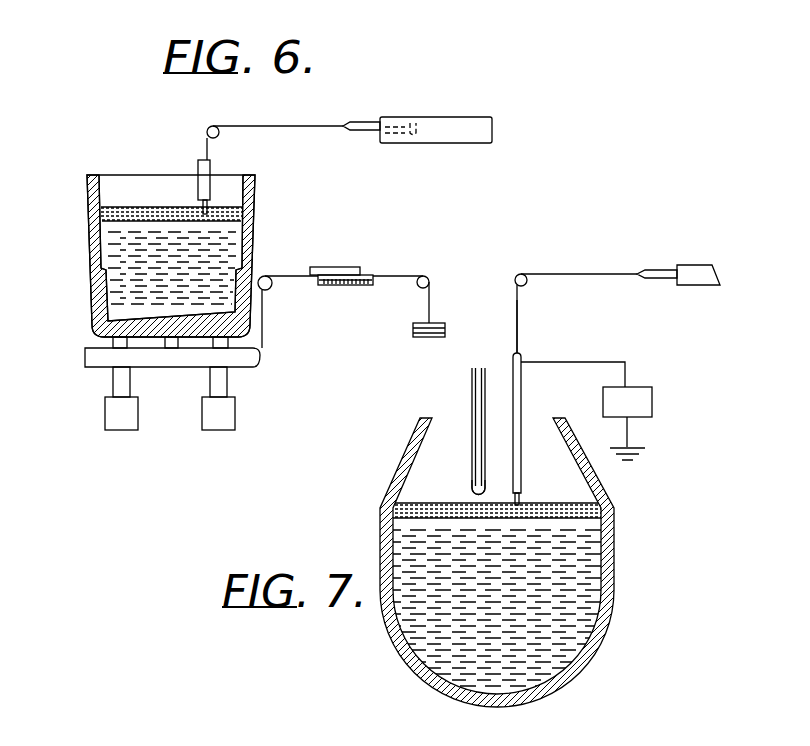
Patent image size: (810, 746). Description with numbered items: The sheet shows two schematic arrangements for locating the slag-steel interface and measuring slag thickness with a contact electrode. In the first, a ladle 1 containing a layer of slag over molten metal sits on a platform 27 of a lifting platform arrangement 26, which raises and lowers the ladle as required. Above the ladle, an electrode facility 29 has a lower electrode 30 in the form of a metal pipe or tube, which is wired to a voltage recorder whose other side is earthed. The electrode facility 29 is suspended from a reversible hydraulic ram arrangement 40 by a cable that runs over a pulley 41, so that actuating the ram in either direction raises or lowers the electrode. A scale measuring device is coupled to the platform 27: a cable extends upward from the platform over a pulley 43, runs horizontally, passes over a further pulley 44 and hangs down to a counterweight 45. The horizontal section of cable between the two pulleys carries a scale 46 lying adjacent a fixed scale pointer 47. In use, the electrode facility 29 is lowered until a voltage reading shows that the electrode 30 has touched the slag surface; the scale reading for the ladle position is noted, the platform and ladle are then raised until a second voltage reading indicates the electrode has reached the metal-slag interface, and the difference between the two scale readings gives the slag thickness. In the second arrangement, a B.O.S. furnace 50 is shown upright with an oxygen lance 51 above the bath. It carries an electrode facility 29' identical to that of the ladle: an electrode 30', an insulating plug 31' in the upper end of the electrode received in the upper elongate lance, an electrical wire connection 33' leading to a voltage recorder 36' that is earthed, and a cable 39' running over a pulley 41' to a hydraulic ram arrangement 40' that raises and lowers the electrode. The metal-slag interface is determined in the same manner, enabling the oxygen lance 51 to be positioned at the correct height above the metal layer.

In FIG. 6, the ladle 1 is at (252, 232).
In FIG. 6, the platform arrangement 26 is at (240, 411).
In FIG. 6, the platform 27 is at (172, 367).
In FIG. 6, the electrode facility 29 is at (181, 165).
In FIG. 6, the electrode 30 is at (181, 189).
In FIG. 6, the hydraulic ram arrangement 40 is at (417, 101).
In FIG. 6, the pulley 41 is at (275, 107).
In FIG. 6, the pulley 43 is at (270, 291).
In FIG. 6, the further pulley 44 is at (420, 289).
In FIG. 6, the counterweight 45 is at (416, 333).
In FIG. 6, the scale 46 is at (328, 287).
In FIG. 6, the fixed scale pointer 47 is at (350, 272).
In FIG. 7, the electrode facility 29' is at (549, 389).
In FIG. 7, the electrode 30' is at (539, 478).
In FIG. 7, the insulating plug 31' is at (472, 474).
In FIG. 7, the electrical wire connection 33' is at (573, 338).
In FIG. 7, the voltage recorder 36' is at (648, 406).
In FIG. 7, the cable 39' is at (545, 321).
In FIG. 7, the hydraulic ram arrangement 40' is at (678, 247).
In FIG. 7, the pulley 41' is at (576, 254).
In FIG. 7, the B.O.S. furnace 50 is at (617, 509).
In FIG. 7, the oxygen lance 51 is at (472, 380).